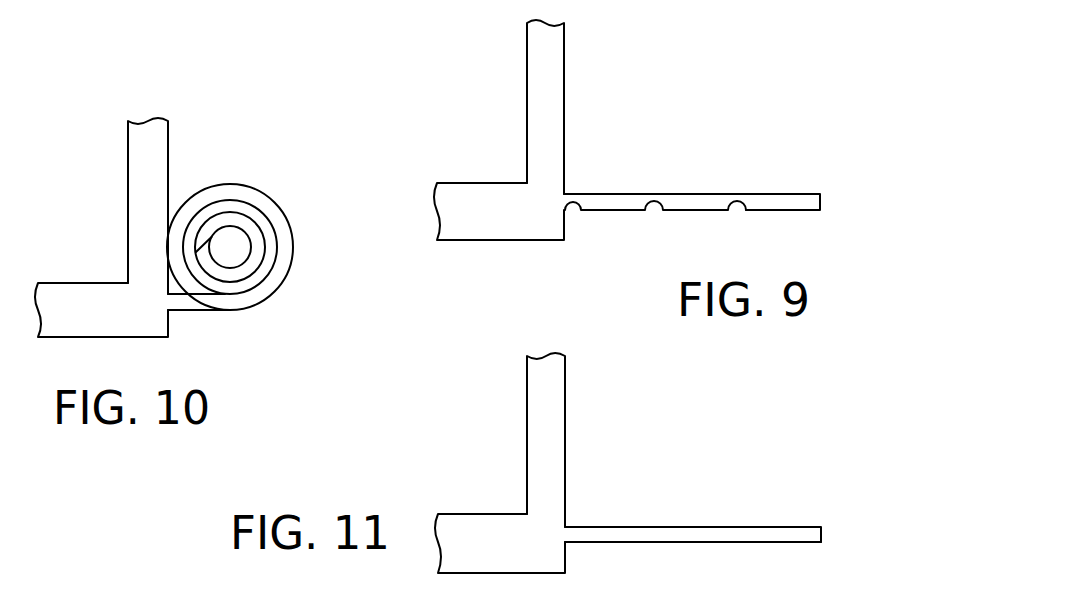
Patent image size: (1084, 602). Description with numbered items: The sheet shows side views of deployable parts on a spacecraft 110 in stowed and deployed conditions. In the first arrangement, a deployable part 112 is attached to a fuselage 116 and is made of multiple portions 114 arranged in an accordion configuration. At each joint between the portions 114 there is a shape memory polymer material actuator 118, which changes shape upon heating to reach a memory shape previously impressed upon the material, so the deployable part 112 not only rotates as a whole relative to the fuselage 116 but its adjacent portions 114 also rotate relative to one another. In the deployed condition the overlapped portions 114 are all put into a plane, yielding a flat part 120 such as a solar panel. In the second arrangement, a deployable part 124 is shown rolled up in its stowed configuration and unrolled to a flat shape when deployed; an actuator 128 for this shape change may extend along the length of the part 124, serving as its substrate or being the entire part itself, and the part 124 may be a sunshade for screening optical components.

In FIG. 9, the spacecraft 110 is at (505, 70).
In FIG. 9, the deployable part 112 is at (698, 176).
In FIG. 9, the portions 114 is at (617, 210).
In FIG. 9, the fuselage 116 is at (538, 115).
In FIG. 9, the shape memory polymer material actuator 118 is at (652, 193).
In FIG. 9, the flat part 120 is at (692, 158).
In FIG. 10, the deployable part 124 is at (256, 187).
In FIG. 11, the deployable part 124 is at (707, 527).
In FIG. 10, the actuator 128 is at (232, 320).
In FIG. 11, the actuator 128 is at (693, 550).